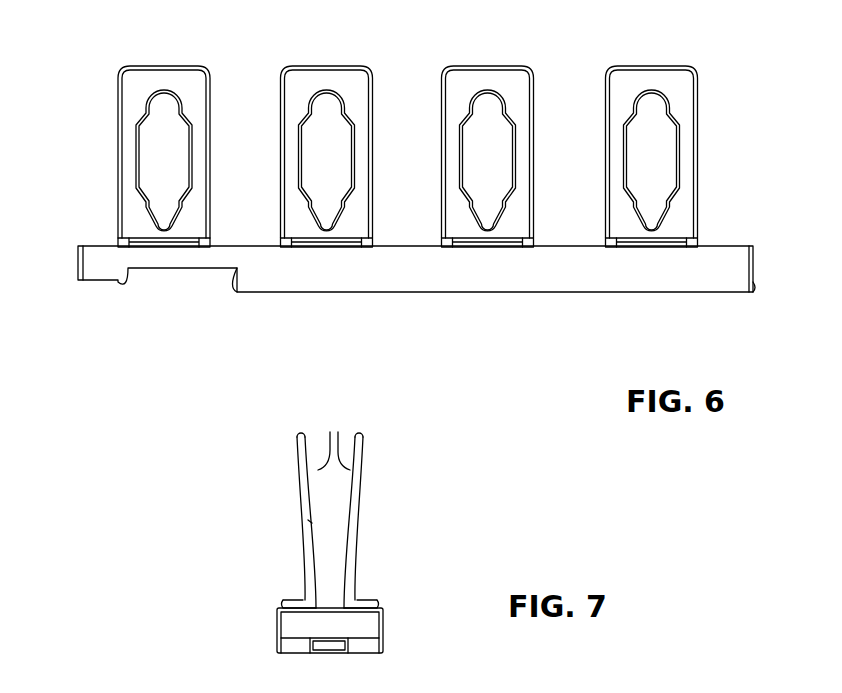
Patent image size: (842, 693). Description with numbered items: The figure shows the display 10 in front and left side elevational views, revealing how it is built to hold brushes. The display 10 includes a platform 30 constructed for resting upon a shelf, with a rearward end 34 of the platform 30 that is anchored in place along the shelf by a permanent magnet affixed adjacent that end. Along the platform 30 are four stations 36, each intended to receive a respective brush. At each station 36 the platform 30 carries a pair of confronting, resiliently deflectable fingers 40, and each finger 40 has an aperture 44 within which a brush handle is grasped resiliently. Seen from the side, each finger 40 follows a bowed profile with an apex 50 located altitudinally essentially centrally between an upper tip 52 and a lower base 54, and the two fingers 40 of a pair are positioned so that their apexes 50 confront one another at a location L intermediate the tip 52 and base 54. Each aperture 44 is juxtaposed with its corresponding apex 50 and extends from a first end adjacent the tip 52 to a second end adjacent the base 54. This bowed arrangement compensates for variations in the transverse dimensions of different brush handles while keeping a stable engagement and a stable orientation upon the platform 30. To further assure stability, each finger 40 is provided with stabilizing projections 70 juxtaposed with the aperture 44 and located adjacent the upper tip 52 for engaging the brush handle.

In FIG. 6, the display 10 is at (92, 285).
In FIG. 7, the display 10 is at (276, 625).
In FIG. 6, the platform 30 is at (703, 291).
In FIG. 7, the platform 30 is at (388, 622).
In FIG. 6, the rearward end 34 is at (753, 294).
In FIG. 6, the station 36 is at (172, 250).
In FIG. 6, the finger 40 is at (210, 69).
In FIG. 7, the finger 40 is at (296, 452).
In FIG. 6, the aperture 44 is at (194, 157).
In FIG. 7, the apex 50 is at (322, 532).
In FIG. 7, the upper tip 52 is at (300, 432).
In FIG. 7, the lower base 54 is at (300, 600).
In FIG. 7, the stabilizing projection 70 is at (334, 435).
In FIG. 7, the location L is at (325, 540).